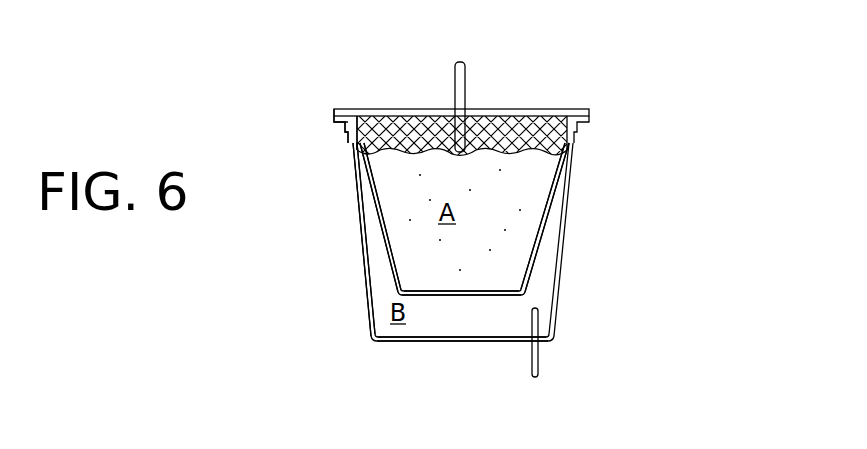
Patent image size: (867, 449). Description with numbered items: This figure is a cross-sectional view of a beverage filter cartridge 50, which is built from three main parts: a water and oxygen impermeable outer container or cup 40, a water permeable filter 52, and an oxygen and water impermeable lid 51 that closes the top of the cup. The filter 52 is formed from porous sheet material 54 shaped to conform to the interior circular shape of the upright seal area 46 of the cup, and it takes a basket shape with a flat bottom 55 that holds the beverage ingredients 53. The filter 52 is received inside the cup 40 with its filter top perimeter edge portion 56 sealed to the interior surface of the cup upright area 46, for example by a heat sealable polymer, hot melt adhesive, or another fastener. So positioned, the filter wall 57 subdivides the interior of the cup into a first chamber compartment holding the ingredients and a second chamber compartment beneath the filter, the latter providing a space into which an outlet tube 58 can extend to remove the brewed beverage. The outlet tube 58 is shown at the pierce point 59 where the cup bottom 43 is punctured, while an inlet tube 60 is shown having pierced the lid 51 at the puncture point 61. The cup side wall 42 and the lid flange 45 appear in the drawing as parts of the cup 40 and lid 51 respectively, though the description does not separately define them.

The outer container or cup 40 is at (557, 305).
The cup side wall 42 is at (368, 312).
The cup bottom 43 is at (408, 343).
The lid flange 45 is at (333, 115).
The upright seal area 46 is at (347, 128).
The beverage filter cartridge 50 is at (641, 203).
The lid 51 is at (578, 109).
The filter 52 is at (538, 238).
The beverage ingredients 53 is at (523, 185).
The porous sheet material 54 is at (537, 116).
The flat bottom 55 is at (447, 295).
The filter top perimeter edge portion 56 is at (357, 112).
The filter wall 57 is at (373, 199).
The outlet tube 58 is at (540, 358).
The pierce point 59 is at (528, 346).
The inlet tube 60 is at (455, 72).
The puncture point 61 is at (451, 107).